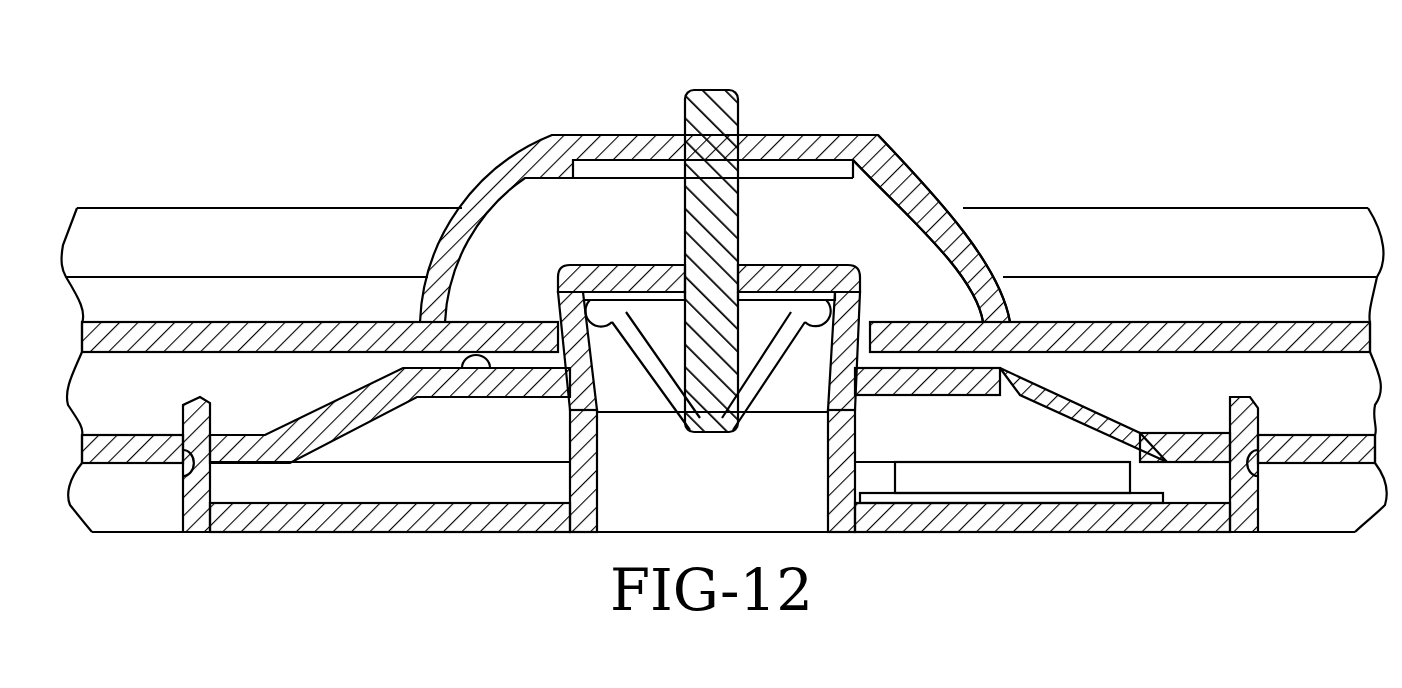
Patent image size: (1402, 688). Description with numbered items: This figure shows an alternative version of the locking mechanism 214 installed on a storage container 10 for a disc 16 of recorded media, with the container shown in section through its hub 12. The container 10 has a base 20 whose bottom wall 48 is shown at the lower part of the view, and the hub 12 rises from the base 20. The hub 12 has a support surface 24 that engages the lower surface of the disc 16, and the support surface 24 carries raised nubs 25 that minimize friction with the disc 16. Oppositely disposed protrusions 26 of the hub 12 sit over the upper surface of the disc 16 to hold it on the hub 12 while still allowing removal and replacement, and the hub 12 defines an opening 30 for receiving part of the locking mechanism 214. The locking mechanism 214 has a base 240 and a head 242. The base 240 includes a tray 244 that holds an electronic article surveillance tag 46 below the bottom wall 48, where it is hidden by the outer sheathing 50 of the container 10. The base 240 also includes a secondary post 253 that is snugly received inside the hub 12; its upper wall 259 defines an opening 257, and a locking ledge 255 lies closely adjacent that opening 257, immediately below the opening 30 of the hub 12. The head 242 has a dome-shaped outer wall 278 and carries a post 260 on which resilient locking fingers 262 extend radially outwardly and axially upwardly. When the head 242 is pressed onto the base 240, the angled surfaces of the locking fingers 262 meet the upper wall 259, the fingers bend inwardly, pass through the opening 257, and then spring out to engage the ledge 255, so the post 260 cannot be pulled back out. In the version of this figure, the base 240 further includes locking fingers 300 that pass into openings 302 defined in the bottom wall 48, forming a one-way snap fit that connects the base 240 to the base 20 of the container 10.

The storage container 10 is at (1137, 205).
The hub 12 is at (325, 402).
The disc 16 is at (1125, 352).
The base 20 is at (312, 212).
The support surface 24 is at (522, 352).
The raised nubs 25 is at (478, 370).
The protrusions 26 is at (548, 308).
The opening 30 is at (760, 268).
The electronic article surveillance tag 46 is at (1025, 490).
The bottom wall 48 is at (1312, 435).
The outer sheathing 50 is at (112, 535).
The locking mechanism 214 is at (896, 130).
The base 240 is at (932, 540).
The head 242 is at (924, 165).
The tray 244 is at (1120, 525).
The secondary post 253 is at (868, 447).
The ledge 255 is at (606, 275).
The opening 257 is at (668, 300).
The upper wall 259 is at (805, 300).
The post 260 is at (708, 95).
The locking fingers 262 is at (650, 378).
The dome-shaped outer wall 278 is at (497, 183).
The locking fingers 300 is at (212, 462).
The openings 302 is at (185, 465).